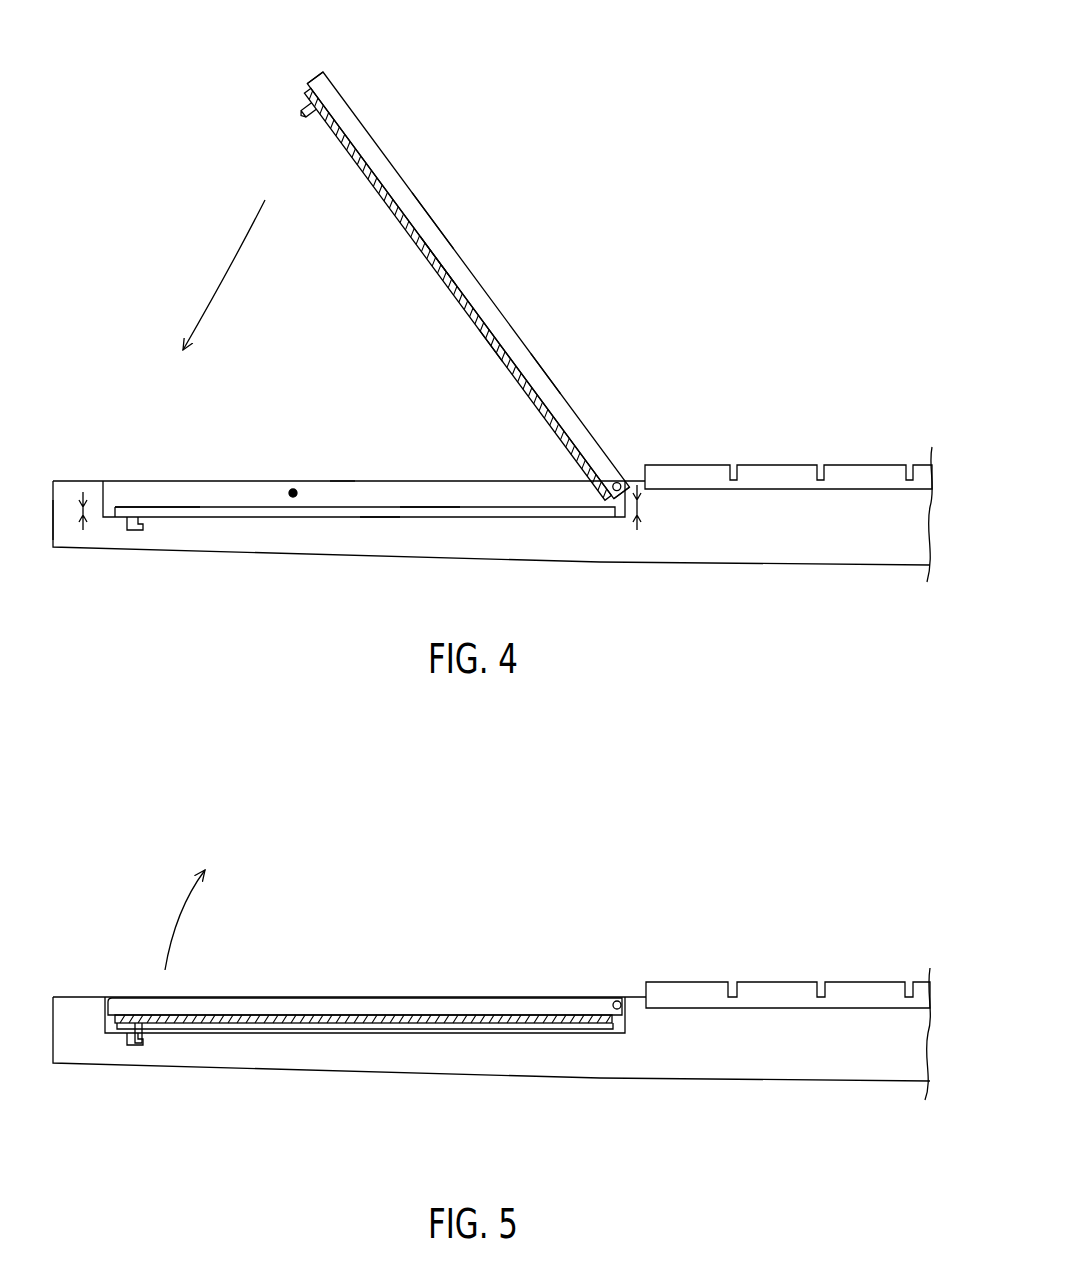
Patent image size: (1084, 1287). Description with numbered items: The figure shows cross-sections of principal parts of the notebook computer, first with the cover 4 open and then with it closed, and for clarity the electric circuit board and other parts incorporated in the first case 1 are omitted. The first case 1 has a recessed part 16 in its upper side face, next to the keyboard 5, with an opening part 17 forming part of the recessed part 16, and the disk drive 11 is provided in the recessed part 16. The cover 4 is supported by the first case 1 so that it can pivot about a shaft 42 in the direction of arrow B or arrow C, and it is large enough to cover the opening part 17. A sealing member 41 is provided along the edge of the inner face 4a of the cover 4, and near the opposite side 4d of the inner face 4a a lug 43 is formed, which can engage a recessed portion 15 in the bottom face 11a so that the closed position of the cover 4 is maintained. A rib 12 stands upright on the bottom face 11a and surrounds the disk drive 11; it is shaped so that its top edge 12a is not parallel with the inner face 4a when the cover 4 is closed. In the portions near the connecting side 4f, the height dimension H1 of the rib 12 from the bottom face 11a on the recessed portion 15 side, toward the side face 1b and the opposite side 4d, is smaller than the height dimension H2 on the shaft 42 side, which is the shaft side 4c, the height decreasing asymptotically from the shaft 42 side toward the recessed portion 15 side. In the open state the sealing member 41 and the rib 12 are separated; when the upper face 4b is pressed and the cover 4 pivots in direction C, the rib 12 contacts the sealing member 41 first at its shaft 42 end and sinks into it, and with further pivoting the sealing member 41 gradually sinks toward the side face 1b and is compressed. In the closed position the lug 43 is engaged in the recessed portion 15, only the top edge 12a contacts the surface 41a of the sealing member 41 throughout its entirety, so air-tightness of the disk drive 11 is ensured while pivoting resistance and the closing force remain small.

In FIG. 4, the first case 1 is at (772, 540).
In FIG. 5, the first case 1 is at (772, 1062).
In FIG. 4, the side face 1b is at (53, 520).
In FIG. 4, the cover 4 is at (511, 341).
In FIG. 5, the cover 4 is at (365, 1005).
In FIG. 4, the inner face 4a is at (434, 251).
In FIG. 4, the upper face 4b is at (428, 212).
In FIG. 4, the shaft side 4c is at (618, 500).
In FIG. 4, the opposite side 4d is at (315, 76).
In FIG. 4, the connecting side 4f is at (541, 381).
In FIG. 4, the keyboard 5 is at (780, 475).
In FIG. 5, the keyboard 5 is at (780, 995).
In FIG. 4, the disk drive 11 is at (293, 489).
In FIG. 4, the bottom face 11a is at (428, 509).
In FIG. 4, the rib 12 is at (218, 512).
In FIG. 5, the rib 12 is at (218, 1028).
In FIG. 4, the top edge 12a is at (180, 503).
In FIG. 4, the recessed portion 15 is at (137, 532).
In FIG. 5, the recessed portion 15 is at (128, 1042).
In FIG. 4, the recessed part 16 is at (380, 516).
In FIG. 4, the opening part 17 is at (342, 492).
In FIG. 4, the sealing member 41 is at (403, 219).
In FIG. 5, the sealing member 41 is at (300, 1020).
In FIG. 4, the surface 41a is at (478, 331).
In FIG. 4, the shaft 42 is at (617, 481).
In FIG. 5, the shaft 42 is at (617, 1000).
In FIG. 4, the lug 43 is at (300, 116).
In FIG. 5, the lug 43 is at (138, 1046).
In FIG. 4, the height dimension H1 is at (80, 515).
In FIG. 4, the height dimension H2 is at (640, 512).
In FIG. 4, the arrow C is at (222, 268).
In FIG. 5, the arrow B is at (180, 905).